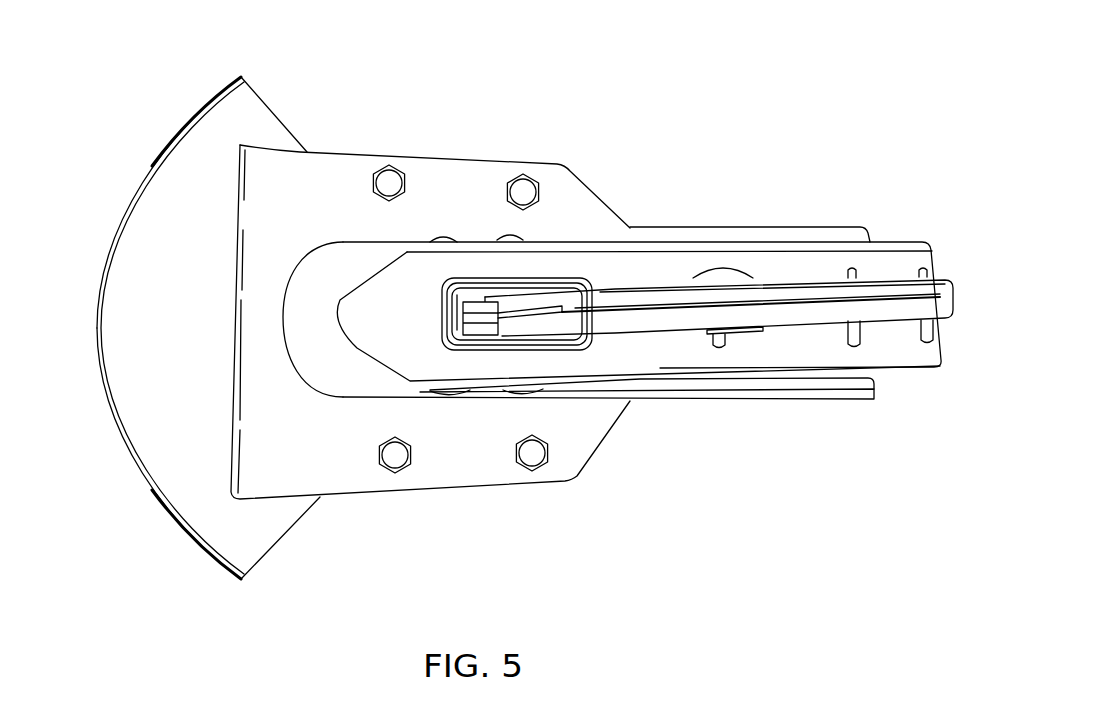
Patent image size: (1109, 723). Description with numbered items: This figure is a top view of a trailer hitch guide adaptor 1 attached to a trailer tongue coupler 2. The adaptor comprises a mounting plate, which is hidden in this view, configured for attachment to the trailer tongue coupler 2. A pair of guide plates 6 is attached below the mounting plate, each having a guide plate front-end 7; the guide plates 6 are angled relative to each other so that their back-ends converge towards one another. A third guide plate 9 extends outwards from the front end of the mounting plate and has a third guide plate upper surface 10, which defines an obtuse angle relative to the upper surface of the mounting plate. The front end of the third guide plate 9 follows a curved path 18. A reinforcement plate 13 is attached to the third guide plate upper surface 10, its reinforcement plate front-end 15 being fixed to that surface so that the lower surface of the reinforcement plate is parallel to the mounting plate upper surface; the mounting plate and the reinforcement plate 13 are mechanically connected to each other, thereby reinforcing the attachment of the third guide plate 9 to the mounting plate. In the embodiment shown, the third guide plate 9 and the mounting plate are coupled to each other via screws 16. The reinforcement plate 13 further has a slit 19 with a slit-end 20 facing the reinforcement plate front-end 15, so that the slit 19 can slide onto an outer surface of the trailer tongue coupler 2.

The trailer hitch guide adaptor 1 is at (428, 531).
The trailer tongue coupler 2 is at (718, 227).
The guide plates 6 is at (285, 85).
The guide plate front-end 7 is at (241, 77).
The third guide plate 9 is at (167, 210).
The third guide plate upper surface 10 is at (165, 408).
The reinforcement plate 13 is at (463, 193).
The reinforcement plate front-end 15 is at (251, 210).
The screws 16 is at (396, 170).
The curved path 18 is at (97, 340).
The slit 19 is at (583, 385).
The slit-end 20 is at (283, 318).